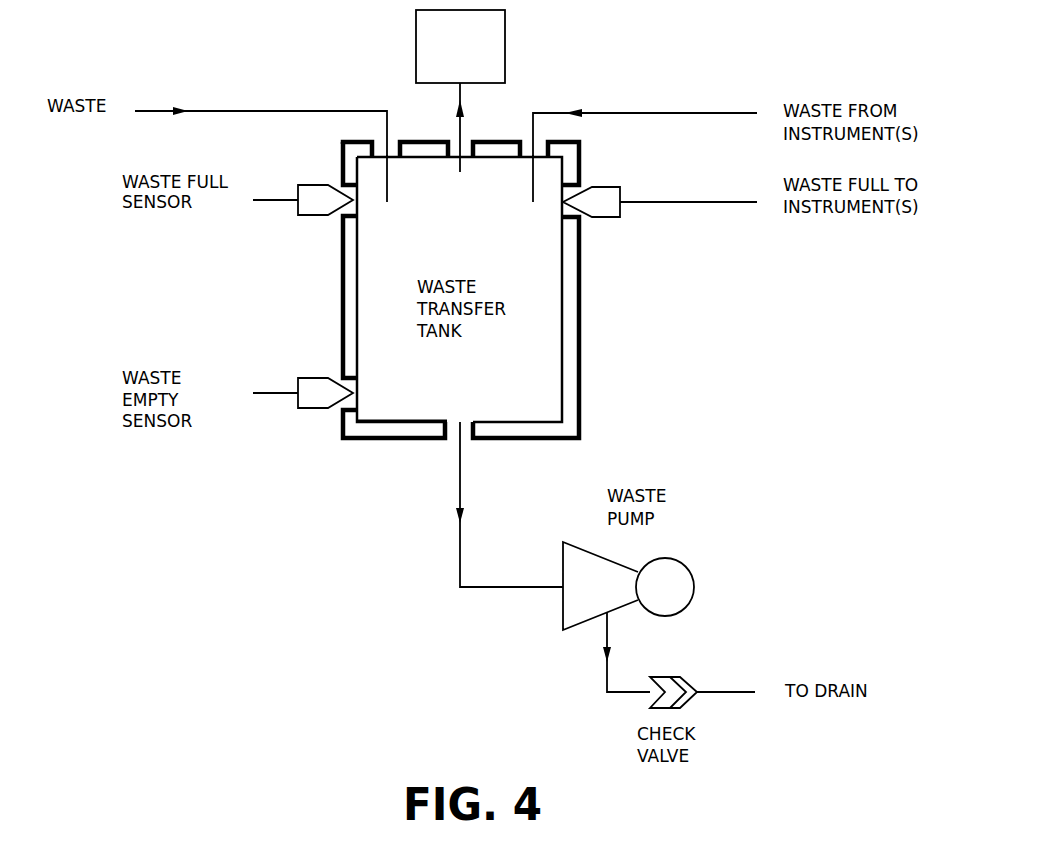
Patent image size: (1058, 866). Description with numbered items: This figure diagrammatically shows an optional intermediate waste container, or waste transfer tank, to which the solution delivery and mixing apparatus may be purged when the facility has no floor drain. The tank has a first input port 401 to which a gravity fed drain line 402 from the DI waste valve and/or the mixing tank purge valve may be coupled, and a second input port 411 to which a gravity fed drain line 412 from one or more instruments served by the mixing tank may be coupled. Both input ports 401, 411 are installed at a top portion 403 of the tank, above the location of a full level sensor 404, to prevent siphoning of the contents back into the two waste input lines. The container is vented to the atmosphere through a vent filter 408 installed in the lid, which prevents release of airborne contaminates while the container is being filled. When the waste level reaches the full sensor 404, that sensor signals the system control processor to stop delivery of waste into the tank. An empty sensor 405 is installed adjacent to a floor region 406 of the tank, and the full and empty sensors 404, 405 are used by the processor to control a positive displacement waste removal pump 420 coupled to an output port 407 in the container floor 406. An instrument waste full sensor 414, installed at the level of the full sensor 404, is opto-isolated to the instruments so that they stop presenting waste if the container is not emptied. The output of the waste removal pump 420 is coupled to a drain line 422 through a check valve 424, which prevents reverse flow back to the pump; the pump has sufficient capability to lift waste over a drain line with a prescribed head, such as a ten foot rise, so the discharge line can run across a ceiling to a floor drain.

The first input port 401 is at (388, 172).
The gravity fed drain line 402 is at (313, 111).
The top portion 403 is at (580, 320).
The full level sensor 404 is at (298, 190).
The empty sensor 405 is at (298, 381).
The floor region 406 is at (390, 408).
The output port 407 is at (458, 423).
The vent filter 408 is at (507, 50).
The second input port 411 is at (532, 173).
The gravity fed drain line 412 is at (637, 113).
The instrument waste full sensor 414 is at (622, 195).
The waste removal pump 420 is at (650, 560).
The drain line 422 is at (712, 692).
The check valve 424 is at (685, 707).